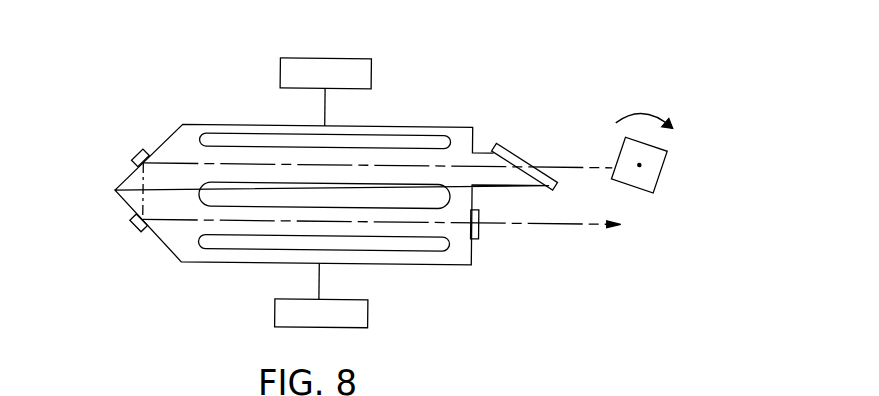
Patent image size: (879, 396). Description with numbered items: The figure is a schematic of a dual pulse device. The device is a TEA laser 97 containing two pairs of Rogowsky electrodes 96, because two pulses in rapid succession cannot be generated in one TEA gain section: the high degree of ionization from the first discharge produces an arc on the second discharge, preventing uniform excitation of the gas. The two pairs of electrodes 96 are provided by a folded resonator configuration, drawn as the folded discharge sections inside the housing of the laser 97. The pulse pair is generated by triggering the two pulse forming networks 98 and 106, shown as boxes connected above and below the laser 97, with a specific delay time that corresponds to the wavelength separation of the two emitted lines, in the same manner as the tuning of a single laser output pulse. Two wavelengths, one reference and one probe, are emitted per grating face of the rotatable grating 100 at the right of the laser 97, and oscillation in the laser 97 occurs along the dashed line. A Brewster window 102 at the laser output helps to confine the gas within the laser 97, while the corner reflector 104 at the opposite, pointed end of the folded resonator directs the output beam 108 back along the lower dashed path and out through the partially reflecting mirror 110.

The Rogowsky electrodes 96 is at (265, 127).
The TEA laser 97 is at (407, 257).
The pulse forming network 98 is at (326, 80).
The grating 100 is at (663, 155).
The Brewster window 102 is at (506, 142).
The corner reflector 104 is at (132, 211).
The pulse forming network 106 is at (321, 307).
The output beam 108 is at (633, 225).
The partially reflecting mirror 110 is at (478, 231).